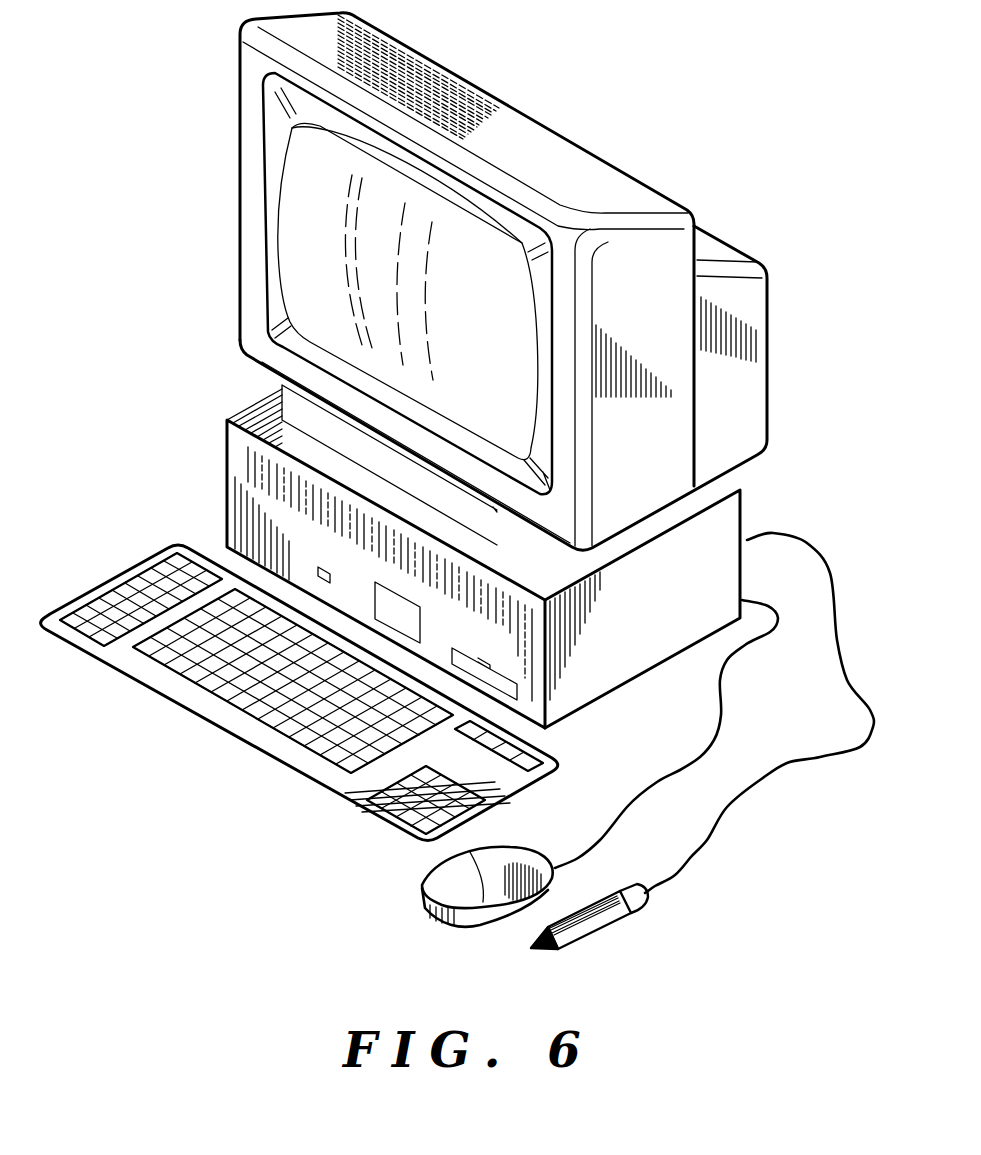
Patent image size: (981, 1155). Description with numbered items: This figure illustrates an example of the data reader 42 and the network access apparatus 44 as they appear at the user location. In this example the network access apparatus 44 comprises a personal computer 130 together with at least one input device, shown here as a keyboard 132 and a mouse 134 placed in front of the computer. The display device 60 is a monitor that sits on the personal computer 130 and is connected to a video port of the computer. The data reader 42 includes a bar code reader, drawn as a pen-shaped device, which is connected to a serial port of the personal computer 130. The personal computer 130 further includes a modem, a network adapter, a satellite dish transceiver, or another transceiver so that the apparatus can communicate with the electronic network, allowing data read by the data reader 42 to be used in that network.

The network access apparatus 44 is at (200, 359).
The display device 60 is at (233, 120).
The personal computer 130 is at (226, 441).
The keyboard 132 is at (92, 653).
The mouse 134 is at (426, 905).
The data reader 42 is at (530, 952).